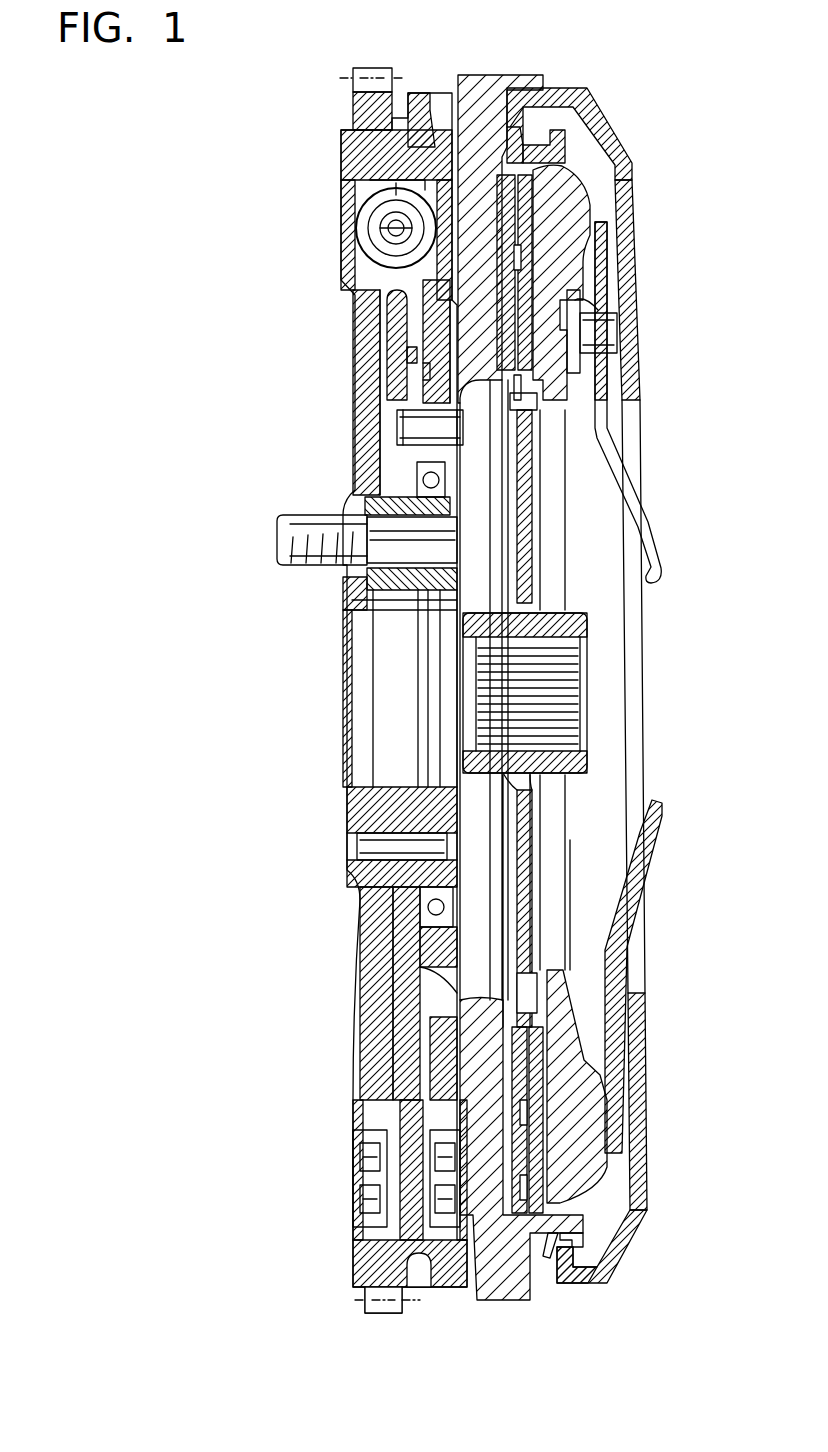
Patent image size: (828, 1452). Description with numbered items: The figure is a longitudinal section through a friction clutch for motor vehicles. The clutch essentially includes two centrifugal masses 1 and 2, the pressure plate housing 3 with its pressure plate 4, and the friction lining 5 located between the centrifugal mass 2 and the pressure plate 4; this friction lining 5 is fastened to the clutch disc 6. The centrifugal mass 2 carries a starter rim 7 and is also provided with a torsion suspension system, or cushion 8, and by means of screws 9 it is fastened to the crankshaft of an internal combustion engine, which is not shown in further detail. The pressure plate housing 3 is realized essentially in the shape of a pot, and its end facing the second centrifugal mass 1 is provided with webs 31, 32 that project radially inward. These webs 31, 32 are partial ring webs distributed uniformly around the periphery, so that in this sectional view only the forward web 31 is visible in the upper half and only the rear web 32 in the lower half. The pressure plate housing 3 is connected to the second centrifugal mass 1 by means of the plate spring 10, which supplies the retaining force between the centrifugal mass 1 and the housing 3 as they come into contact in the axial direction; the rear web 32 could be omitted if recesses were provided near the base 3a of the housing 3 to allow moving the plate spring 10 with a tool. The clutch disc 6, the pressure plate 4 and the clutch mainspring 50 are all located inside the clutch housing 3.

The centrifugal mass 1 is at (487, 93).
The centrifugal mass 2 is at (418, 98).
The pressure plate housing 3 is at (608, 142).
The base of the clutch housing 3a is at (625, 250).
The pressure plate 4 is at (570, 215).
The friction lining 5 is at (575, 292).
The clutch disc 6 is at (528, 557).
The starter rim 7 is at (358, 68).
The torsion suspension system 8 is at (395, 228).
The screw 9 is at (315, 525).
The plate spring 10 is at (577, 1258).
The forward web 31 is at (545, 87).
The rear web 32 is at (568, 1262).
The clutch mainspring 50 is at (613, 463).